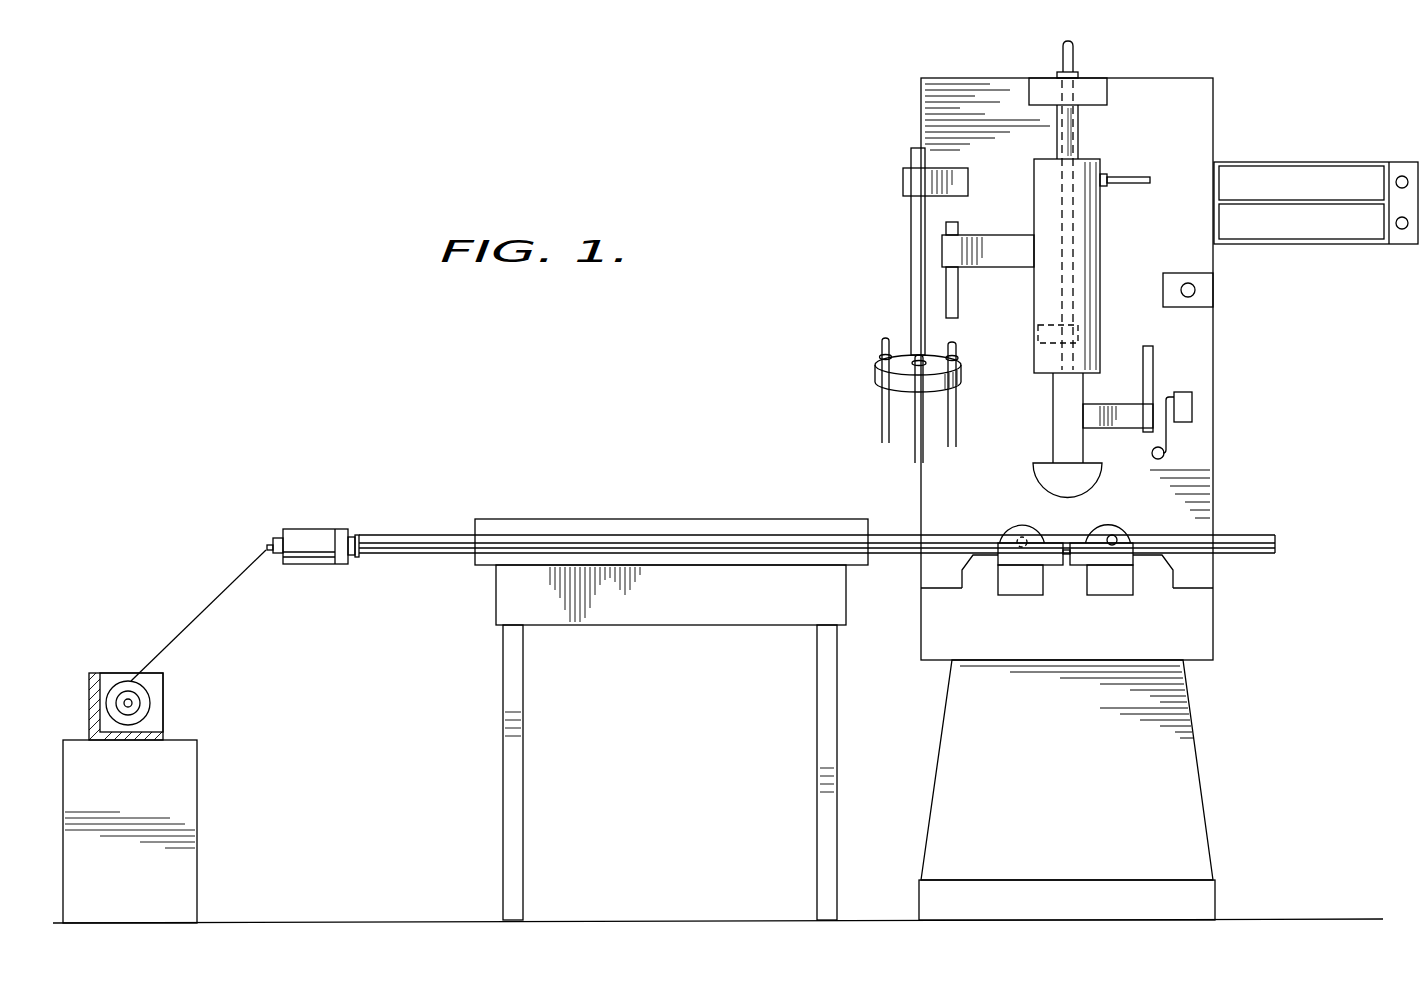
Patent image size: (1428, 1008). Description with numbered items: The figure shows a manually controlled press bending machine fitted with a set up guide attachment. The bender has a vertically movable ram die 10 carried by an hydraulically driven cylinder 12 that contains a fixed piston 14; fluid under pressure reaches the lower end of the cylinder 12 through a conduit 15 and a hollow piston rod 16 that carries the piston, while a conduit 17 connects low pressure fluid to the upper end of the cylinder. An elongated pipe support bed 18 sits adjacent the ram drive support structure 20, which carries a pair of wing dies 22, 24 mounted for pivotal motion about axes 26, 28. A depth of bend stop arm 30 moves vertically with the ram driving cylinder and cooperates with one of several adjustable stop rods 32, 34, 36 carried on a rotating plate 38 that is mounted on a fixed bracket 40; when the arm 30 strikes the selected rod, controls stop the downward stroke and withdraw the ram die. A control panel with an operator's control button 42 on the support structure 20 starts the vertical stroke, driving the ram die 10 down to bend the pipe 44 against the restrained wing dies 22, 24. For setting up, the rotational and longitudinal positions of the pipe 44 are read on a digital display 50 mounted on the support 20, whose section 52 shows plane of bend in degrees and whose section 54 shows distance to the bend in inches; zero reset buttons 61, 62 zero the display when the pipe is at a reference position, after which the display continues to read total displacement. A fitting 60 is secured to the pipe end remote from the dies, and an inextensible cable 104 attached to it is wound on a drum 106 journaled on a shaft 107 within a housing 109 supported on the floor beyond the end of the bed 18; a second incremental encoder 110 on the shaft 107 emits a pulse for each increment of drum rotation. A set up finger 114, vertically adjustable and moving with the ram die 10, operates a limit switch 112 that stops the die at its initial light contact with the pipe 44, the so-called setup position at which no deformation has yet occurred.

The ram die 10 is at (1090, 477).
The hydraulically driven cylinder 12 is at (1100, 366).
The fixed piston 14 is at (1078, 332).
The conduit 15 is at (1074, 64).
The hollow piston rod 16 is at (1079, 140).
The conduit 17 is at (1146, 176).
The pipe support bed 18 is at (478, 566).
The ram drive support structure 20 is at (1215, 486).
The wing die 22 is at (1015, 570).
The wing die 24 is at (1082, 570).
The pivot axis 26 is at (1000, 526).
The pivot axis 28 is at (1126, 524).
The depth of bend stop arm 30 is at (957, 228).
The depth of bend stop rod 32 is at (881, 405).
The depth of bend stop rod 34 is at (913, 456).
The depth of bend stop rod 36 is at (957, 442).
The rotating plate 38 is at (874, 376).
The fixed bracket 40 is at (901, 181).
The operator's control button 42 is at (1195, 290).
The pipe 44 is at (428, 534).
The digital display 50 is at (1316, 195).
The display section 52 is at (1362, 152).
The display section 54 is at (1346, 238).
The fitting 60 is at (316, 522).
The zero reset button 61 is at (1400, 176).
The zero reset button 62 is at (1402, 229).
The cable 104 is at (220, 594).
The drum 106 is at (150, 700).
The shaft 107 is at (133, 712).
The housing 109 is at (100, 673).
The second incremental encoder 110 is at (136, 708).
The limit switch 112 is at (1192, 405).
The set up finger 114 is at (1142, 430).